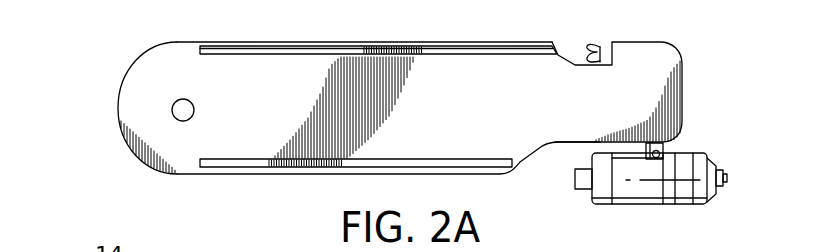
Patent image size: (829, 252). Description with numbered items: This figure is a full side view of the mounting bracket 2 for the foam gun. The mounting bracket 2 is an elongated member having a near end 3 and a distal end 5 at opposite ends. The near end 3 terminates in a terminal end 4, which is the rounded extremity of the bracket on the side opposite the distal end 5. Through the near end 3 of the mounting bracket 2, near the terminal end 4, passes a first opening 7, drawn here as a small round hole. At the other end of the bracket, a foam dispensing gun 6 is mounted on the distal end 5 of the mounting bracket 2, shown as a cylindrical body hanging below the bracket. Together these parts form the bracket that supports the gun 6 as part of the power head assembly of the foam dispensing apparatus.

The mounting bracket 2 is at (405, 102).
The near end 3 is at (215, 72).
The terminal end 4 is at (117, 107).
The distal end 5 is at (683, 86).
The foam dispensing gun 6 is at (693, 155).
The first opening 7 is at (195, 110).